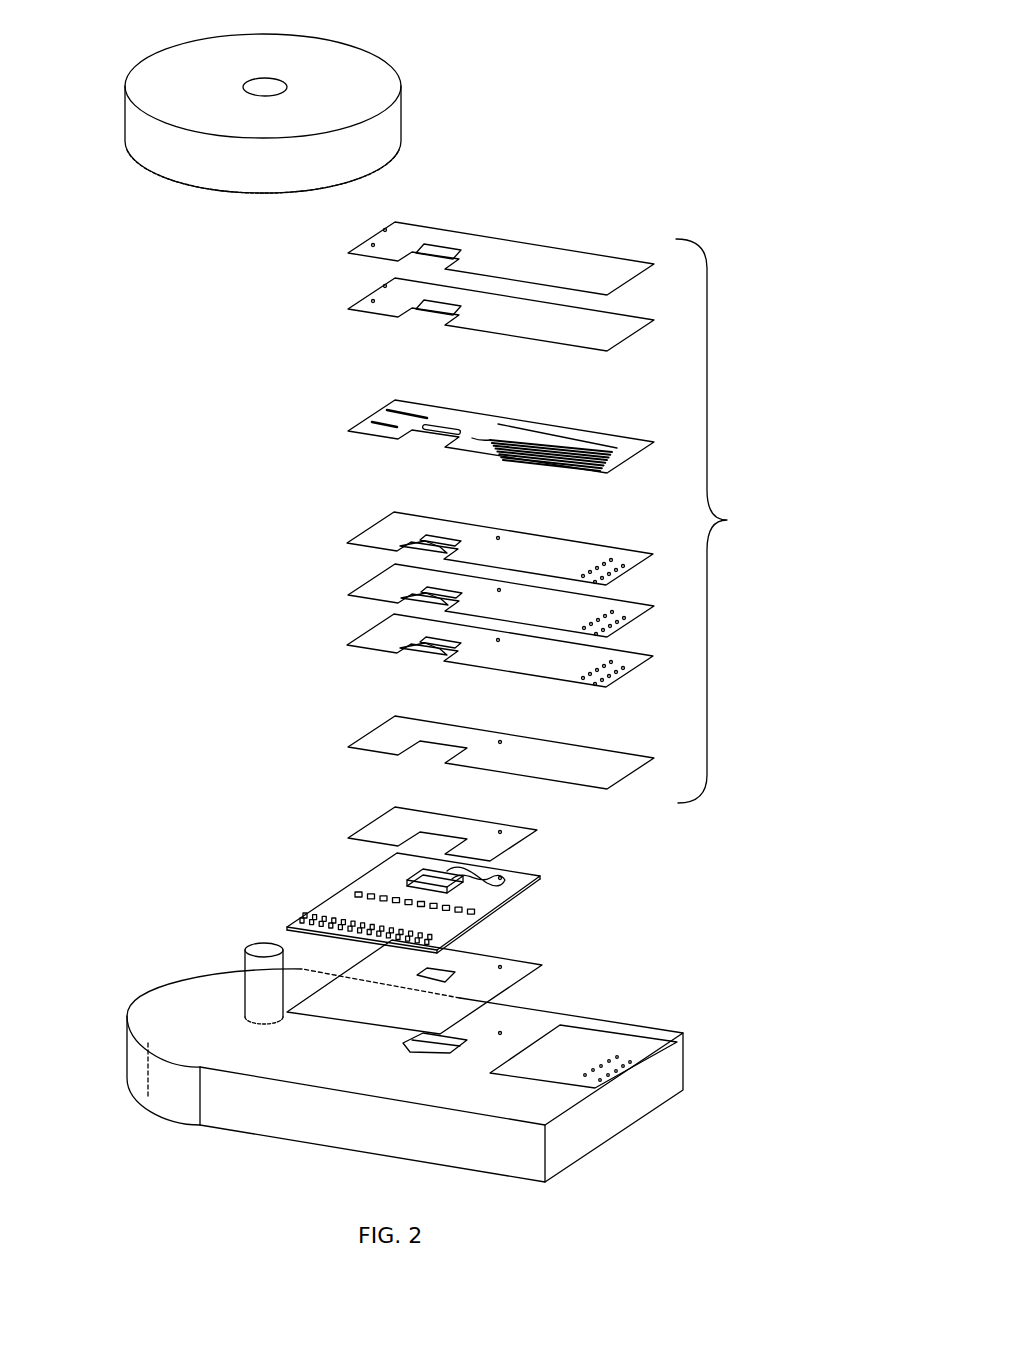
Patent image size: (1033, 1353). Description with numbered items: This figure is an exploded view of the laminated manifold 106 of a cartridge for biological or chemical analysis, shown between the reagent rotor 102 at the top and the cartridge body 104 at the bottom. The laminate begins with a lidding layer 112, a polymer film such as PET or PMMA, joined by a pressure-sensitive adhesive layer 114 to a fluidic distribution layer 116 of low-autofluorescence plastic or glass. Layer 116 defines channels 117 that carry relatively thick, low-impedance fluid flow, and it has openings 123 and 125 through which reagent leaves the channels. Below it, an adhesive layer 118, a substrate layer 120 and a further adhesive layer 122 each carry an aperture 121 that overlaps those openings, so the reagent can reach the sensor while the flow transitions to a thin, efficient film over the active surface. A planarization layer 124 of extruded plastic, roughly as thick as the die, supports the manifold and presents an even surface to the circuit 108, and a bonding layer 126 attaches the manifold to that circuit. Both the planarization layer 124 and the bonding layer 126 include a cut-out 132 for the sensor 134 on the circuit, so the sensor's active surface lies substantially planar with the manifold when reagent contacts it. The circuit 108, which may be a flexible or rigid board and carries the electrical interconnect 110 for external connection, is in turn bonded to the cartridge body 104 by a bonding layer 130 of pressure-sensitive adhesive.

The reagent rotor 102 is at (181, 54).
The cartridge body 104 is at (618, 1122).
The laminated manifold 106 is at (730, 521).
The circuit 108 is at (419, 900).
The electrical interconnect 110 is at (290, 912).
The lidding layer 112 is at (360, 250).
The adhesive layer 114 is at (360, 307).
The fluidic distribution layer 116 is at (491, 417).
The channels 117 is at (617, 438).
The adhesive layer 118 is at (378, 530).
The substrate layer 120 is at (362, 597).
The aperture 121 is at (412, 542).
The adhesive layer 122 is at (362, 643).
The opening 123 is at (400, 426).
The planarization layer 124 is at (362, 746).
The opening 125 is at (470, 438).
The bonding layer 126 is at (362, 836).
The bonding layer 130 is at (522, 968).
The cut-out 132 is at (437, 841).
The sensor 134 is at (450, 873).